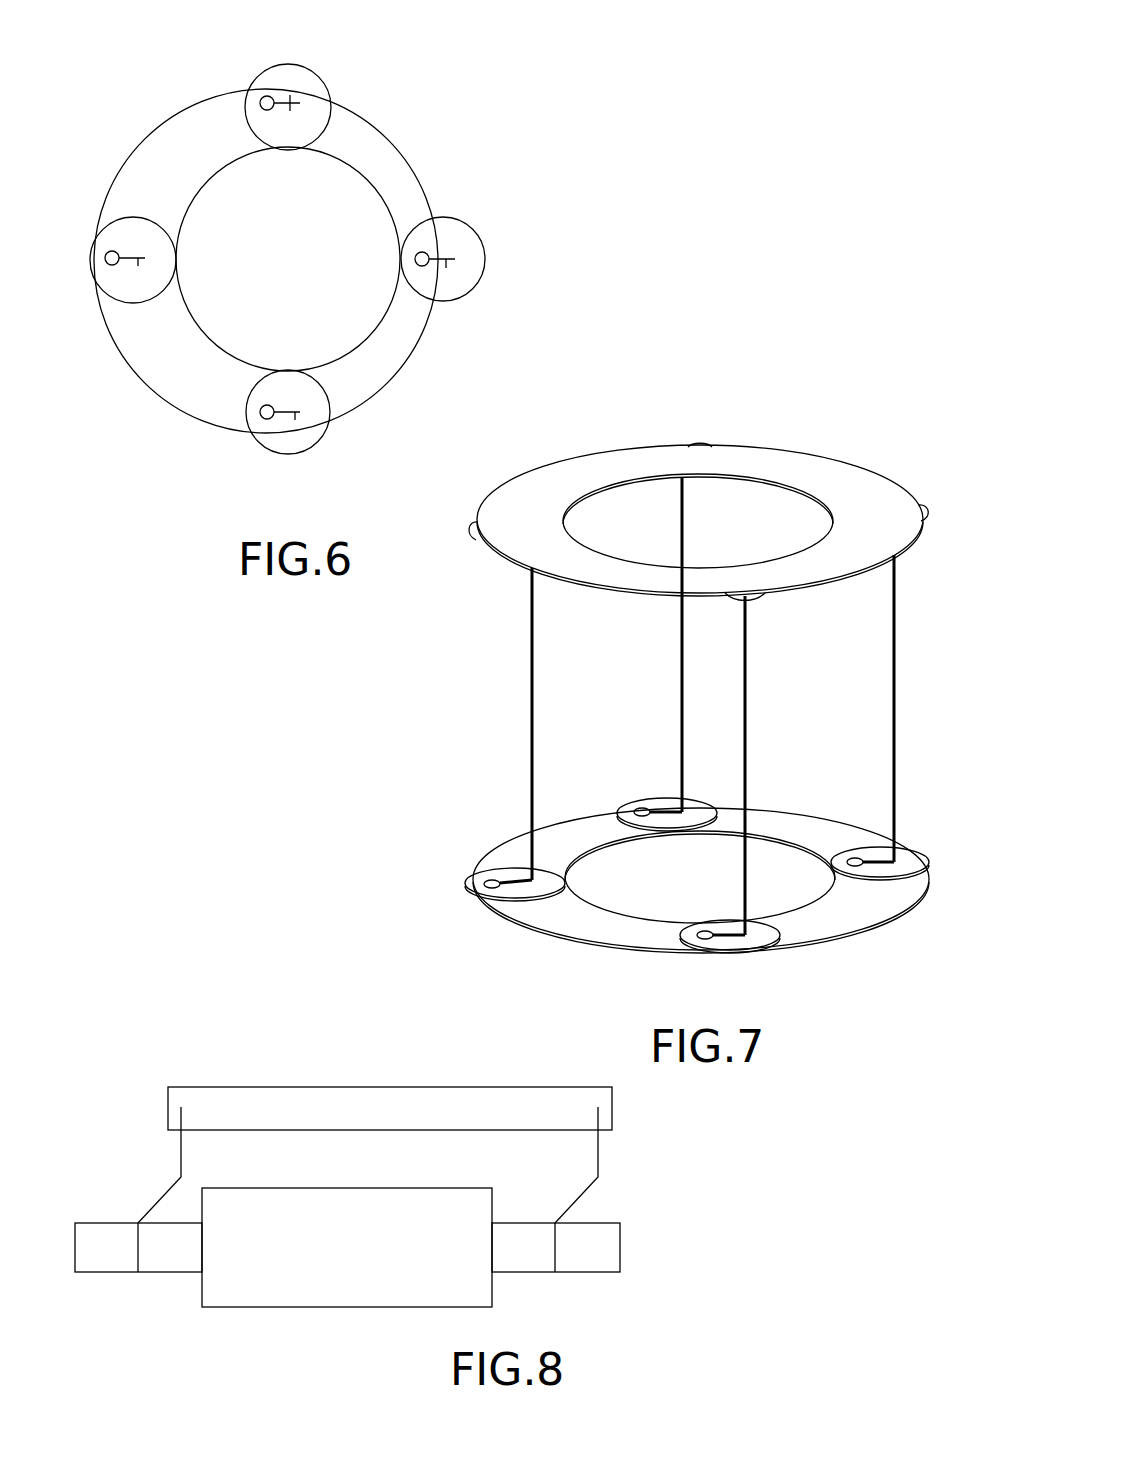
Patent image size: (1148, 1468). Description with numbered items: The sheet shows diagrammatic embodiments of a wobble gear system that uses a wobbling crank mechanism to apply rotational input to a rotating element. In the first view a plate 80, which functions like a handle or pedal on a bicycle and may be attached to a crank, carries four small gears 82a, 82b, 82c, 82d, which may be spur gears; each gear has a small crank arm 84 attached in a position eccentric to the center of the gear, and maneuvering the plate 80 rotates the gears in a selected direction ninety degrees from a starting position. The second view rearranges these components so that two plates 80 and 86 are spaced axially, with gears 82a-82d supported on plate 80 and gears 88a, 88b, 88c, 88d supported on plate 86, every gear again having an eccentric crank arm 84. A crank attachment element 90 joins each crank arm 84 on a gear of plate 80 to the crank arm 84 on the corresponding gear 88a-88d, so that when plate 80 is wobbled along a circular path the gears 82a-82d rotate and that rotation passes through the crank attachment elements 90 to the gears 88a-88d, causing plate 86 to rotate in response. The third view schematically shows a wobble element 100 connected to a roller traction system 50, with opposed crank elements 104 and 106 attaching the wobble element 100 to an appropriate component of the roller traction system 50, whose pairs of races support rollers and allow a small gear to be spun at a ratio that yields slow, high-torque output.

In FIG. 6, the plate 80 is at (160, 135).
In FIG. 7, the plate 80 is at (812, 470).
In FIG. 6, the small gear 82a is at (283, 70).
In FIG. 7, the small gear 82a is at (678, 447).
In FIG. 6, the small gear 82b is at (485, 253).
In FIG. 7, the small gear 82b is at (925, 505).
In FIG. 6, the small gear 82c is at (290, 448).
In FIG. 7, the small gear 82c is at (760, 600).
In FIG. 6, the small gear 82d is at (130, 218).
In FIG. 7, the small gear 82d is at (472, 540).
In FIG. 6, the crank arm 84 is at (290, 95).
In FIG. 7, the crank arm 84 is at (645, 808).
In FIG. 7, the plate 86 is at (580, 925).
In FIG. 7, the gear 88a is at (675, 805).
In FIG. 7, the gear 88b is at (885, 875).
In FIG. 7, the gear 88c is at (732, 948).
In FIG. 7, the gear 88d is at (510, 868).
In FIG. 7, the crank attachment element 90 is at (680, 645).
In FIG. 8, the wobble element 100 is at (357, 1100).
In FIG. 8, the crank element 104 is at (158, 1200).
In FIG. 8, the crank element 106 is at (584, 1195).
In FIG. 8, the roller traction system 50 is at (325, 1308).